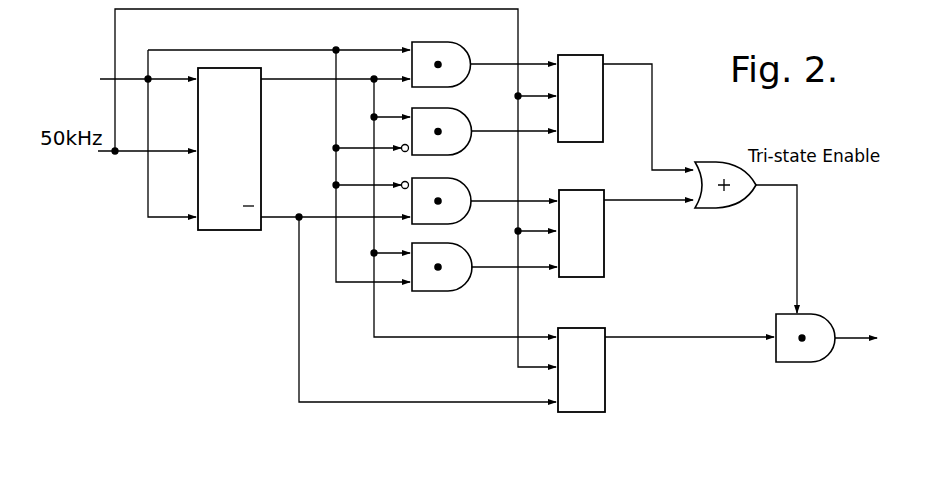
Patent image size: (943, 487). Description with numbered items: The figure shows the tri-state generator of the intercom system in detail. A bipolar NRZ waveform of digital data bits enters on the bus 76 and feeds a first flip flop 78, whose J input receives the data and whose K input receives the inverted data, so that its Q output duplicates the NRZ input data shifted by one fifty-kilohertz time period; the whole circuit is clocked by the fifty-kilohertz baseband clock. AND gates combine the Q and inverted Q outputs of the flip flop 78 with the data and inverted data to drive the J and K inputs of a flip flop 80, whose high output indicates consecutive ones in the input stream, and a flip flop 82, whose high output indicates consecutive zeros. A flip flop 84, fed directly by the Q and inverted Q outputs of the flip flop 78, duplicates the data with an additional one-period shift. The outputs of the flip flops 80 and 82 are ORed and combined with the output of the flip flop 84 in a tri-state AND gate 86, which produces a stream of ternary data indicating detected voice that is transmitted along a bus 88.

The bus 76 is at (105, 79).
The flip flop 78 is at (197, 231).
The flip flop 80 is at (603, 142).
The flip flop 82 is at (604, 277).
The flip flop 84 is at (605, 412).
The tri-state AND gate 86 is at (832, 322).
The bus 88 is at (856, 338).